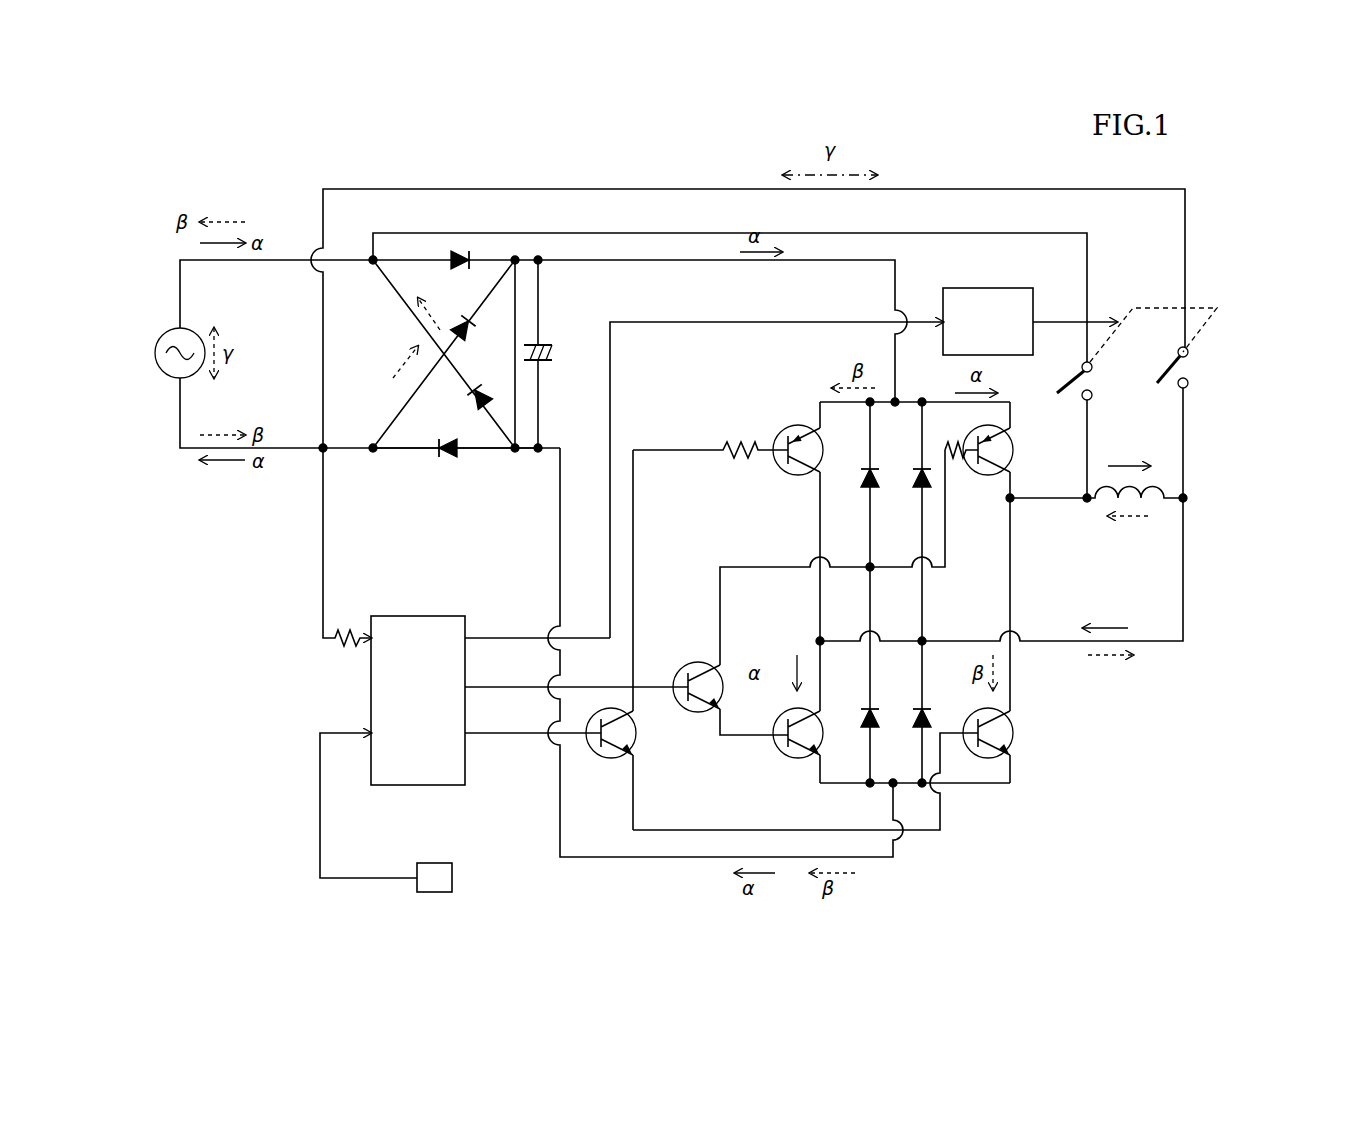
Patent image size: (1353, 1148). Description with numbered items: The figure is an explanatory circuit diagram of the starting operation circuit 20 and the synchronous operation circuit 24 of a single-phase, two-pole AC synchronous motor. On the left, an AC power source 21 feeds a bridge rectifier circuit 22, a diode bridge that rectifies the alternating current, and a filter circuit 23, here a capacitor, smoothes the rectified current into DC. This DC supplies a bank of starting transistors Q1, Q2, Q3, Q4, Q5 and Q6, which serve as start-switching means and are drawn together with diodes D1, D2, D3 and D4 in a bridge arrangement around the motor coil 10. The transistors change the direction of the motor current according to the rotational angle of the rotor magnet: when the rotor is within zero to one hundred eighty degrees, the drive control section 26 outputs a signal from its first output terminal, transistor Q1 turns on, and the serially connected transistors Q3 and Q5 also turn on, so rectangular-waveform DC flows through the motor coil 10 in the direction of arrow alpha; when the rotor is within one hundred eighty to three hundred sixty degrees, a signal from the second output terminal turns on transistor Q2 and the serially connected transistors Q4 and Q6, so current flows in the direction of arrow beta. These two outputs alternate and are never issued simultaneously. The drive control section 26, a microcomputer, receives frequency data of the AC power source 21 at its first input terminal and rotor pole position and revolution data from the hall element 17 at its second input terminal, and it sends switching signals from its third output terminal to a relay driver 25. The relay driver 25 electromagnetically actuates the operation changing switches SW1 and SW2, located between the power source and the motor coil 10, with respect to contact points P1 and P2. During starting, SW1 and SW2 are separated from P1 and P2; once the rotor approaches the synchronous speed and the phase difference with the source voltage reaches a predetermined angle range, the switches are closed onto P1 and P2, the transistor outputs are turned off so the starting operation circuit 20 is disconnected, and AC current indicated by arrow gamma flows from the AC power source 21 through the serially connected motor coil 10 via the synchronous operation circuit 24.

The motor coil 10 is at (1160, 490).
The hall element 17 is at (452, 878).
The starting operation circuit 20 is at (1207, 558).
The AC power source 21 is at (163, 333).
The bridge rectifier circuit 22 is at (423, 462).
The filter circuit 23 is at (560, 338).
The synchronous operation circuit 24 is at (978, 180).
The relay driver 25 is at (972, 288).
The drive control section 26 is at (416, 616).
The starting transistor Q1 is at (594, 678).
The starting transistor Q2 is at (563, 640).
The starting transistor Q3 is at (998, 556).
The starting transistor Q4 is at (728, 556).
The starting transistor Q5 is at (771, 745).
The starting transistor Q6 is at (837, 768).
The diode D1 is at (857, 484).
The diode D2 is at (857, 675).
The diode D3 is at (909, 521).
The diode D4 is at (909, 712).
The operation changing switch SW1 is at (1130, 350).
The operation changing switch SW2 is at (1160, 365).
The contact point P1 is at (1103, 443).
The contact point P2 is at (1198, 438).